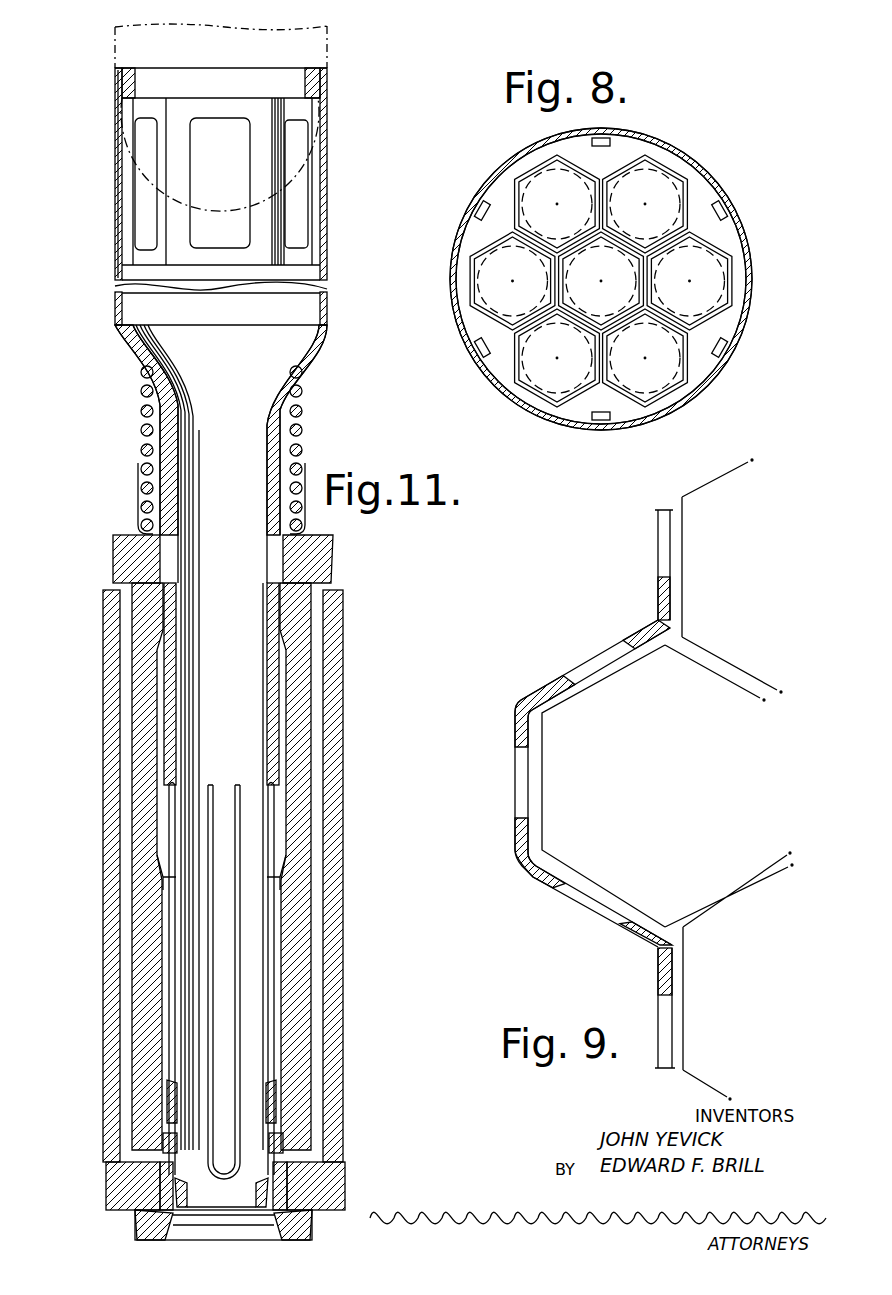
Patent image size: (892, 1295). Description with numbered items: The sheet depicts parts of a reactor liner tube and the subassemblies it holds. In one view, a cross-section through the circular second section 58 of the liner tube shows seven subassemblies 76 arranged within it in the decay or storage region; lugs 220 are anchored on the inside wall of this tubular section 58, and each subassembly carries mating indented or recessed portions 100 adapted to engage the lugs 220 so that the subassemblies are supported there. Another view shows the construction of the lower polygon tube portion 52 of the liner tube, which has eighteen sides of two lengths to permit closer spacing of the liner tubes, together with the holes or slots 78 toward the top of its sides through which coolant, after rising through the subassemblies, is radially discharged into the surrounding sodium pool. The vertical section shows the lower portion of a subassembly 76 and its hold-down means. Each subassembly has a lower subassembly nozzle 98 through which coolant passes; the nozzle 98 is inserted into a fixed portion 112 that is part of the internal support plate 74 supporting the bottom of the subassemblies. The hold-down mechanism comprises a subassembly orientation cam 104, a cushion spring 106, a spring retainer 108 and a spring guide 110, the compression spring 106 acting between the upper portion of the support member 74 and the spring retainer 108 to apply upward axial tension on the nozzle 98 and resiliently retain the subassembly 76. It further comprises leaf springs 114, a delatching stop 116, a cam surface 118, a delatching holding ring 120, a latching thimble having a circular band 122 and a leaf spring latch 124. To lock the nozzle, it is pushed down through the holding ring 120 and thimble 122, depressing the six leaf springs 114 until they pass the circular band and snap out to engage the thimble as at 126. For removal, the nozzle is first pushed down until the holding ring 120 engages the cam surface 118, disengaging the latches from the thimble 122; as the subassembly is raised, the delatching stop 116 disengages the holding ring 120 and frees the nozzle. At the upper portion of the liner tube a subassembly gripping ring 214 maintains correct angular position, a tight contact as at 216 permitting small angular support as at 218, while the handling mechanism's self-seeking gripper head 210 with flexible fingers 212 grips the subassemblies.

In FIG. 8, the lower polygon tube portion 52 is at (678, 400).
In FIG. 9, the lower polygon tube portion 52 is at (658, 598).
In FIG. 8, the second section of the liner tube 58 is at (575, 432).
In FIG. 11, the internal support plate 74 is at (113, 568).
In FIG. 11, the subassembly 76 is at (336, 58).
In FIG. 9, the subassembly 76 is at (746, 785).
In FIG. 9, the holes or slots 78 is at (596, 660).
In FIG. 11, the lower subassembly nozzle 98 is at (130, 356).
In FIG. 8, the lower subassembly nozzle 98 is at (718, 287).
In FIG. 11, the indented or recessed portions 100 is at (303, 192).
In FIG. 11, the subassembly orientation cam 104 is at (300, 353).
In FIG. 11, the cushion spring 106 is at (142, 432).
In FIG. 11, the spring retainer 108 is at (142, 378).
In FIG. 11, the spring guide 110 is at (138, 497).
In FIG. 11, the fixed portion 112 is at (295, 625).
In FIG. 11, the leaf springs 114 is at (237, 805).
In FIG. 11, the delatching stop 116 is at (277, 882).
In FIG. 11, the cam surface 118 is at (273, 1023).
In FIG. 11, the delatching holding ring 120 is at (275, 1092).
In FIG. 11, the latching thimble 122 is at (272, 1138).
In FIG. 11, the leaf spring latch 124 is at (278, 1163).
In FIG. 11, the engagement point 126 is at (170, 1152).
In FIG. 11, the self-seeking gripper head 210 is at (135, 48).
In FIG. 11, the flexible fingers 212 is at (143, 162).
In FIG. 11, the subassembly gripping ring 214 is at (122, 92).
In FIG. 11, the tight contact 216 is at (138, 72).
In FIG. 11, the angular support location 218 is at (130, 97).
In FIG. 8, the lugs 220 is at (733, 357).